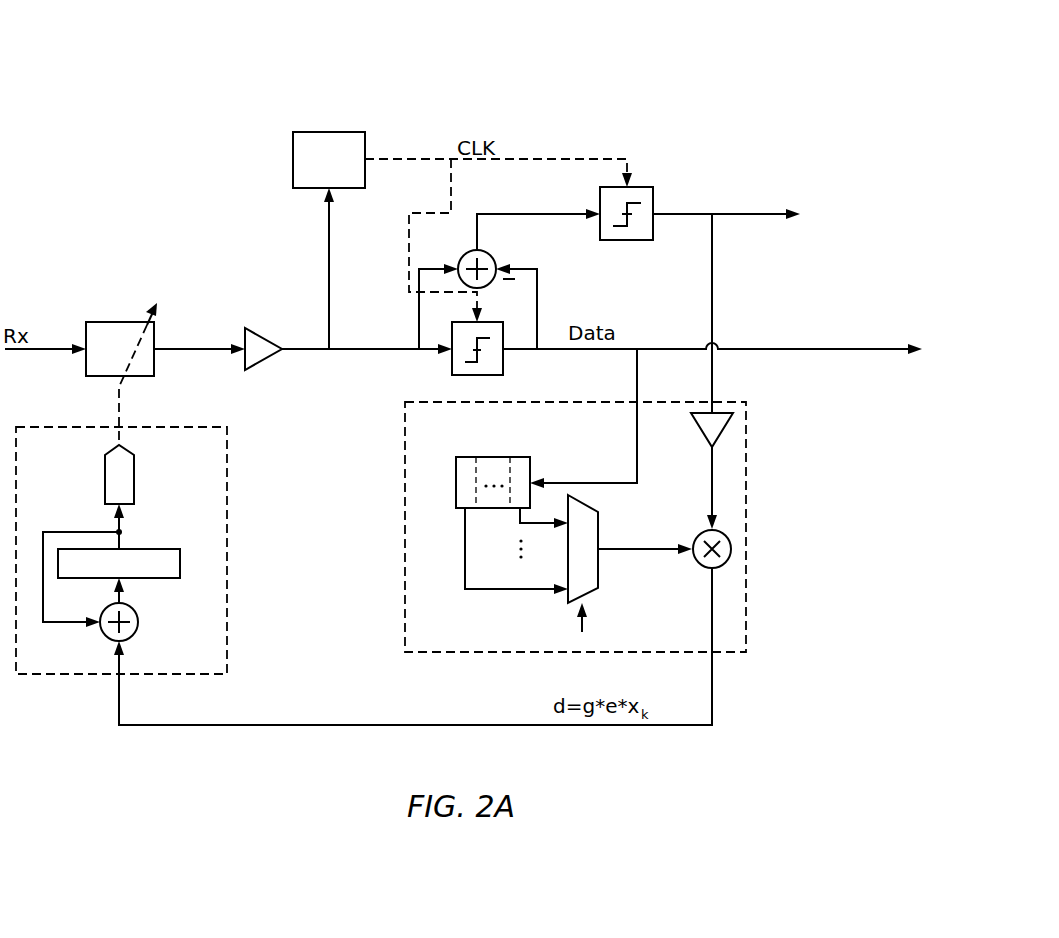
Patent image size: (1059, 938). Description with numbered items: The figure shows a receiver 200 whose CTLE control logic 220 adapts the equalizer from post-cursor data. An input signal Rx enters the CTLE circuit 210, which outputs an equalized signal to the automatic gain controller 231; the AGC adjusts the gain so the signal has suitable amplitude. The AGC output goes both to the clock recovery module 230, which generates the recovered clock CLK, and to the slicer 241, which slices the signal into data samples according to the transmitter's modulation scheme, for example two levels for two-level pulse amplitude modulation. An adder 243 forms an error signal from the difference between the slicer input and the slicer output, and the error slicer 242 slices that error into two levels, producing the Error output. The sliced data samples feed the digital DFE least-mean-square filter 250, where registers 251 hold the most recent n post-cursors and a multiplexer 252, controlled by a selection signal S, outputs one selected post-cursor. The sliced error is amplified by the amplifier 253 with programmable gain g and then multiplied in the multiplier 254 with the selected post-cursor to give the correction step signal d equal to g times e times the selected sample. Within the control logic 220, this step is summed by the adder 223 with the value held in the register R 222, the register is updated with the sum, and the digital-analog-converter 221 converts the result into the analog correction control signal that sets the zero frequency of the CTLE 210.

The receiver 200 is at (188, 70).
The CTLE circuit 210 is at (118, 322).
The CTLE control logic 220 is at (227, 497).
The digital-analog-converter 221 is at (105, 470).
The register R 222 is at (150, 549).
The adder 223 is at (138, 612).
The clock recovery module 230 is at (347, 133).
The automatic gain controller 231 is at (265, 325).
The slicer 241 is at (505, 362).
The error slicer 242 is at (645, 186).
The adder 243 is at (492, 257).
The digital DFE least-mean-square filter 250 is at (748, 592).
The registers 251 is at (505, 457).
The multiplexer 252 is at (598, 580).
The amplifier 253 is at (728, 427).
The multiplier 254 is at (732, 546).